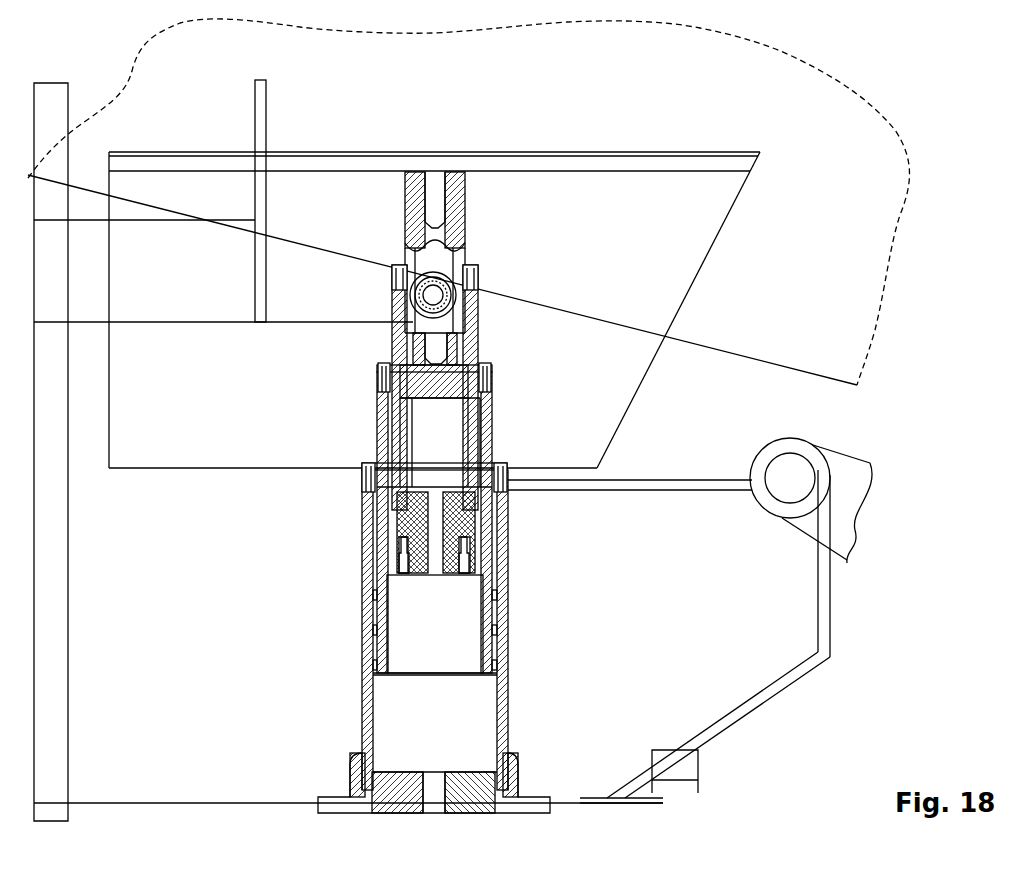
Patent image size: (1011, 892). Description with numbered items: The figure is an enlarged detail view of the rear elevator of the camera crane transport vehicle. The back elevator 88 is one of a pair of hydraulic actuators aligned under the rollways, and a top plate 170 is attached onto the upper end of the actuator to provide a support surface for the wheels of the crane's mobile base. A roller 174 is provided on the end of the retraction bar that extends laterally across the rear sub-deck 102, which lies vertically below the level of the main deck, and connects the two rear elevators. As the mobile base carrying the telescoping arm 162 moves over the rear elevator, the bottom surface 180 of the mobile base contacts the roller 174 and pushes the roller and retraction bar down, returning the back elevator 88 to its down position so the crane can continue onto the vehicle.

The top plate 170 is at (722, 152).
The roller 174 is at (442, 276).
The bottom surface of the mobile base 180 is at (551, 311).
The telescoping arm 162 is at (878, 258).
The rear sub-deck 102 is at (672, 480).
The back elevator 88 is at (363, 500).